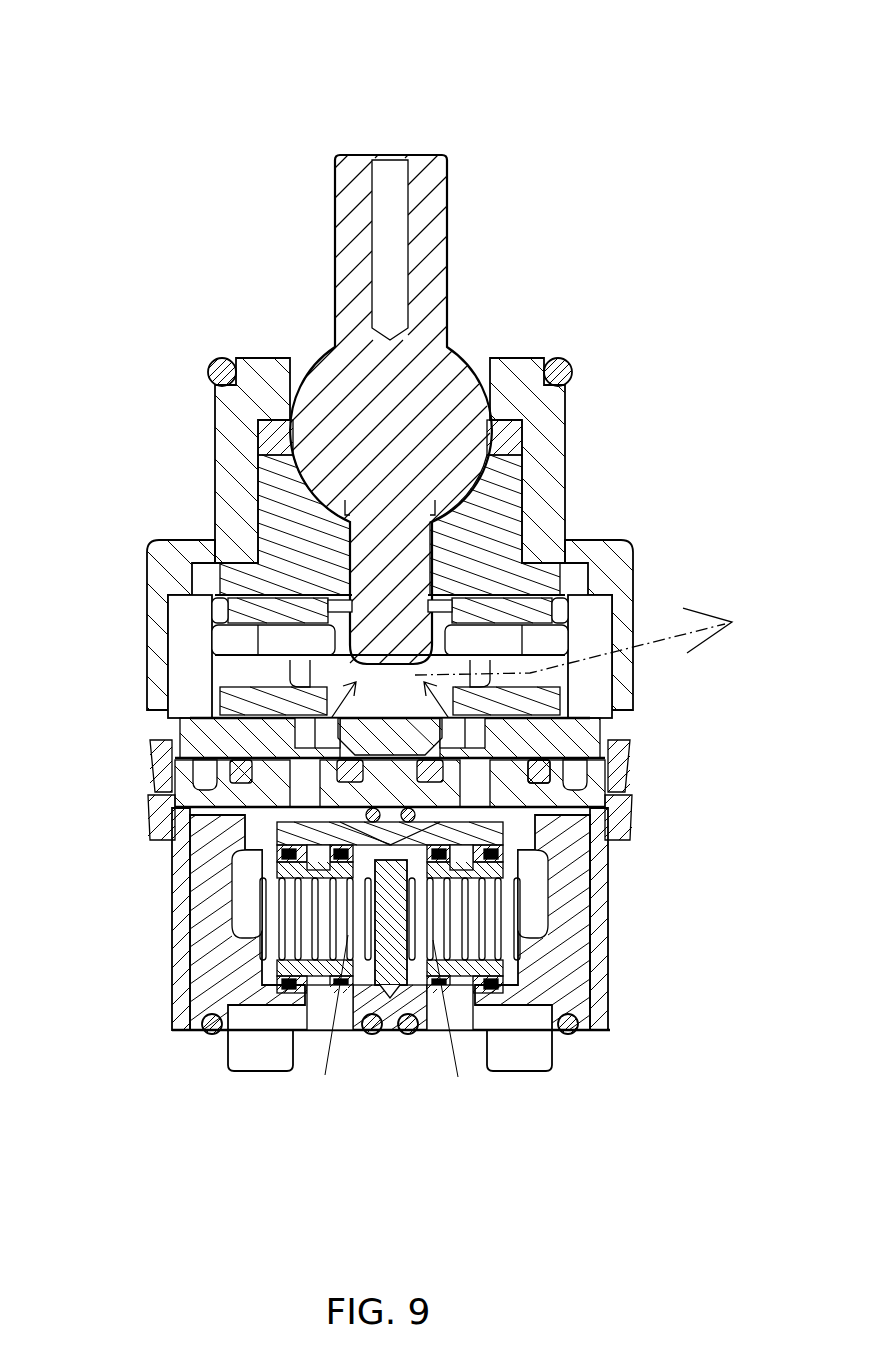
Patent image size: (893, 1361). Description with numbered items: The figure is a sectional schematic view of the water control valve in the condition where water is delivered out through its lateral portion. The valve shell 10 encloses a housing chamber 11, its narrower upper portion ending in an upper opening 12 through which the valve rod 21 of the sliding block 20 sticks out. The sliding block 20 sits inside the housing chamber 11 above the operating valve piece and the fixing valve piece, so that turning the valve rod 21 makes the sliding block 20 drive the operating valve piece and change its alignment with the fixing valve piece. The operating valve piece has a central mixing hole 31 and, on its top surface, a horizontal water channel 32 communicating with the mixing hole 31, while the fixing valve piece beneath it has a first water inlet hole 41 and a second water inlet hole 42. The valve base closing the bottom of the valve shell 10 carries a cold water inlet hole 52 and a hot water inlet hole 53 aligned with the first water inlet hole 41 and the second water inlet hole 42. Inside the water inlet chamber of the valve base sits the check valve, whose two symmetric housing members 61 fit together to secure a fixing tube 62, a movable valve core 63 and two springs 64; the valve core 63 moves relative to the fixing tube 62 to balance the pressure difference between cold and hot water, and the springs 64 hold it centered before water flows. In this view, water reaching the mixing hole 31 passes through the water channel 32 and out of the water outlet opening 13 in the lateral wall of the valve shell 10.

The valve shell 10 is at (552, 352).
The housing chamber 11 is at (178, 625).
The upper opening 12 is at (307, 367).
The water outlet opening 13 is at (603, 660).
The sliding block 20 is at (248, 609).
The valve rod 21 is at (430, 165).
The mixing hole 31 is at (376, 705).
The water channel 32 is at (548, 640).
The first water inlet hole 41 is at (185, 752).
The second water inlet hole 42 is at (603, 750).
The cold water inlet hole 52 is at (160, 835).
The hot water inlet hole 53 is at (612, 840).
The housing member 61 is at (175, 1014).
The fixing tube 62 is at (406, 1033).
The valve core 63 is at (190, 887).
The spring 64 is at (265, 928).